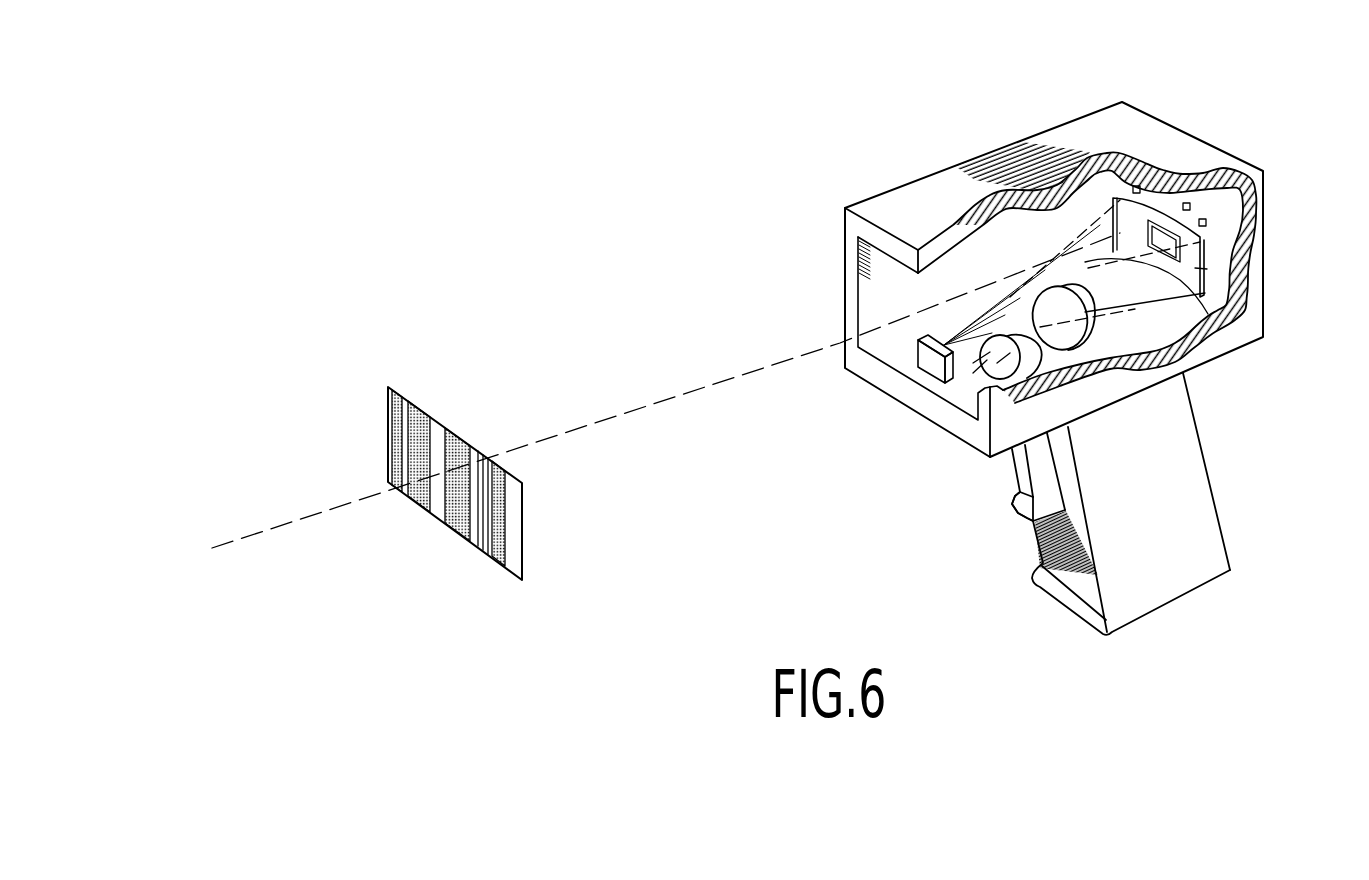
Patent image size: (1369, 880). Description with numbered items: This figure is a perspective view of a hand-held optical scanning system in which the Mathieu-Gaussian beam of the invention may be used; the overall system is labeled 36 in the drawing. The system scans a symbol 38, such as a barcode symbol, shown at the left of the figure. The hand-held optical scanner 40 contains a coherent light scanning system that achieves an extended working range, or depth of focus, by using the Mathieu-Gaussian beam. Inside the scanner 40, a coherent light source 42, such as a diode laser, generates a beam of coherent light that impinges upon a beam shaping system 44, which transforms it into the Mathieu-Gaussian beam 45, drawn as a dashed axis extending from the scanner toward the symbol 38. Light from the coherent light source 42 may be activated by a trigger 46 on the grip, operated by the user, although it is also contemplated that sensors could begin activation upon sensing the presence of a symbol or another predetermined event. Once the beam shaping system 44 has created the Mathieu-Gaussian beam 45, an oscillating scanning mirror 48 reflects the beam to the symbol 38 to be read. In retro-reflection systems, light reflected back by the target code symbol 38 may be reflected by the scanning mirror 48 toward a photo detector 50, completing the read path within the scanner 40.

The bar code scanning system 36 is at (427, 205).
The symbol 38 is at (420, 410).
The hand-held optical scanner 40 is at (1185, 133).
The coherent light source 42 is at (1032, 365).
The beam shaping system 44 is at (1090, 333).
The Mathieu-Gaussian beam 45 is at (706, 387).
The trigger 46 is at (1022, 510).
The oscillating scanning mirror 48 is at (1196, 268).
The photo detector 50 is at (927, 363).